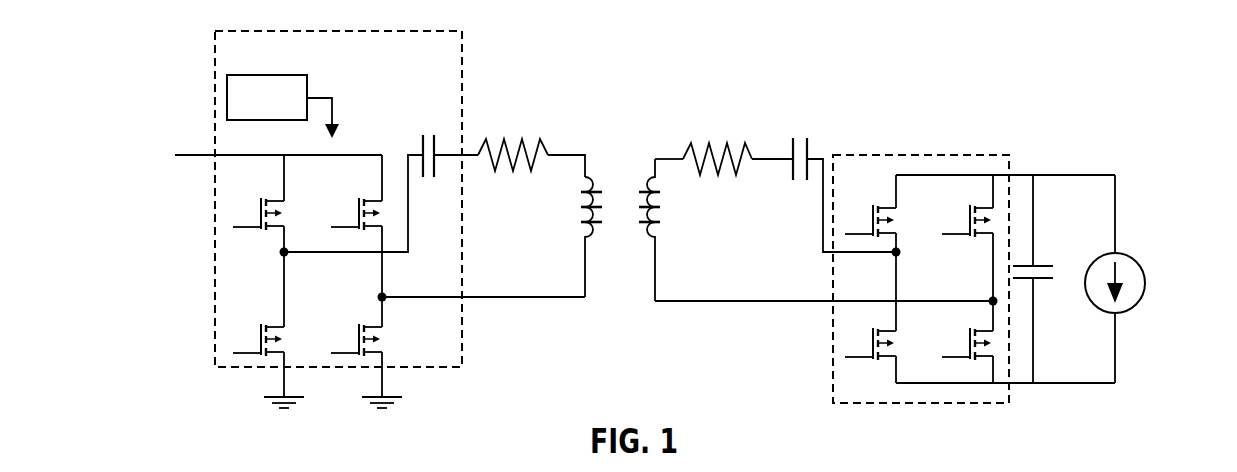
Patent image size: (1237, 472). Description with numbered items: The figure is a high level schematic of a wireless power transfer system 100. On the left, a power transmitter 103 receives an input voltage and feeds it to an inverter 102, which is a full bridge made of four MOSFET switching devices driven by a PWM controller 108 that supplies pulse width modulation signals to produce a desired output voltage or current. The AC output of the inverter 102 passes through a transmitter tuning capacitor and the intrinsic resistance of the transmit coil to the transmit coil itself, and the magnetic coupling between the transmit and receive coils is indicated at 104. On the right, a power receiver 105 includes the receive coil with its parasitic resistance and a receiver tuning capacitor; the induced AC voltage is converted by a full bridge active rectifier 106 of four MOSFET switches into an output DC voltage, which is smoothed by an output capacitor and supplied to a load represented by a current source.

The wireless power transfer system 100 is at (597, 118).
The inverter 102 is at (242, 368).
The power transmitter 103 is at (160, 196).
The transformer / coupled inductors L1 L2 104 is at (612, 316).
The power receiver 105 is at (738, 350).
The rectifier 106 is at (833, 365).
The PWM controller 108 is at (273, 75).